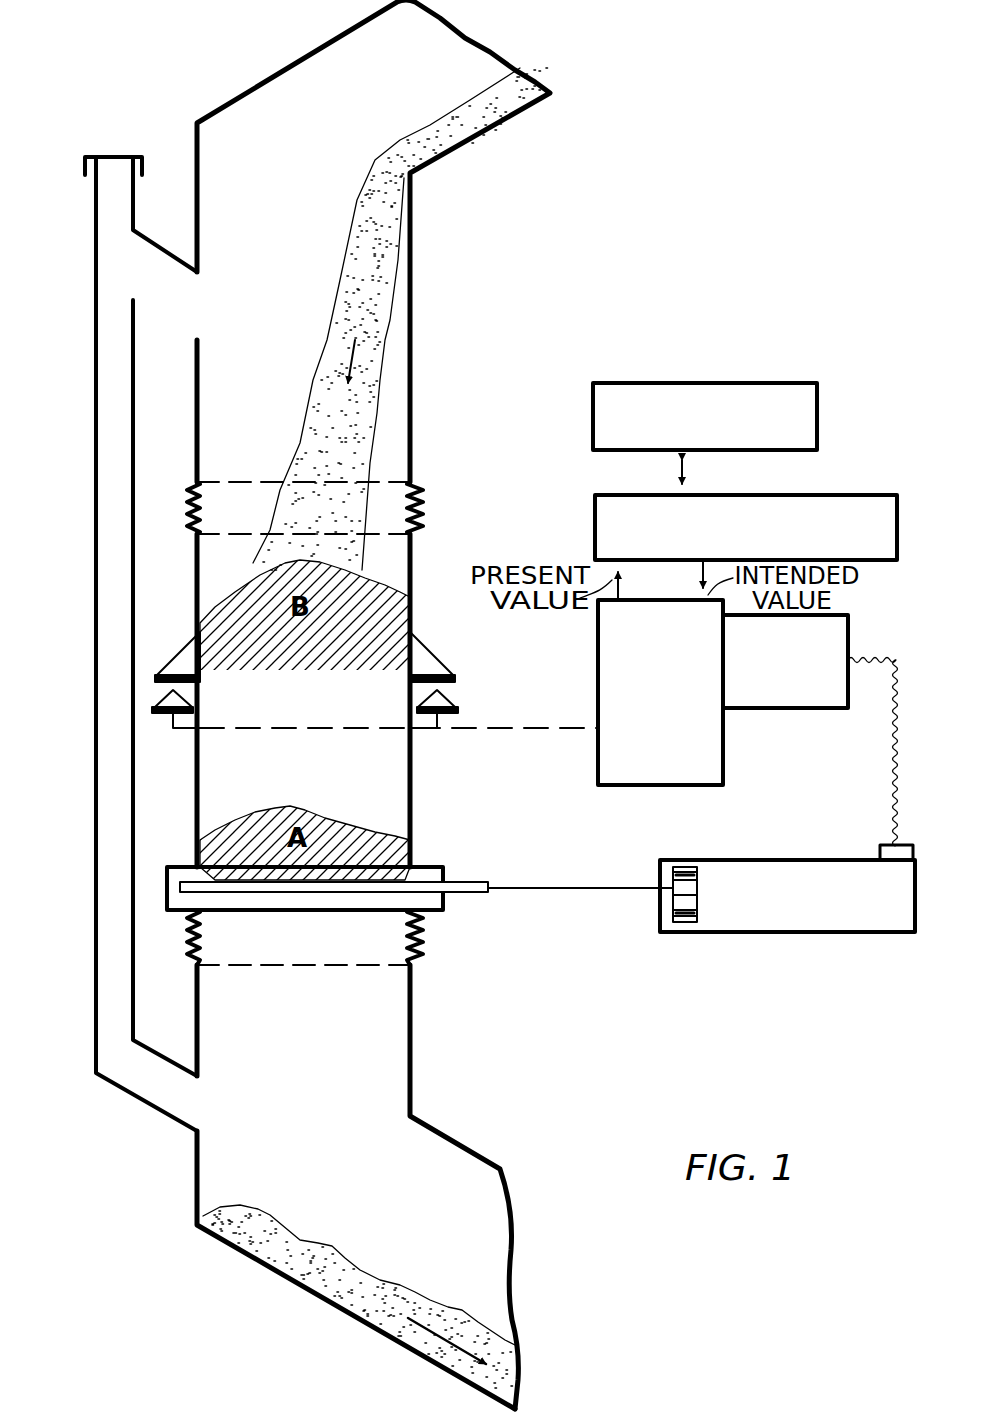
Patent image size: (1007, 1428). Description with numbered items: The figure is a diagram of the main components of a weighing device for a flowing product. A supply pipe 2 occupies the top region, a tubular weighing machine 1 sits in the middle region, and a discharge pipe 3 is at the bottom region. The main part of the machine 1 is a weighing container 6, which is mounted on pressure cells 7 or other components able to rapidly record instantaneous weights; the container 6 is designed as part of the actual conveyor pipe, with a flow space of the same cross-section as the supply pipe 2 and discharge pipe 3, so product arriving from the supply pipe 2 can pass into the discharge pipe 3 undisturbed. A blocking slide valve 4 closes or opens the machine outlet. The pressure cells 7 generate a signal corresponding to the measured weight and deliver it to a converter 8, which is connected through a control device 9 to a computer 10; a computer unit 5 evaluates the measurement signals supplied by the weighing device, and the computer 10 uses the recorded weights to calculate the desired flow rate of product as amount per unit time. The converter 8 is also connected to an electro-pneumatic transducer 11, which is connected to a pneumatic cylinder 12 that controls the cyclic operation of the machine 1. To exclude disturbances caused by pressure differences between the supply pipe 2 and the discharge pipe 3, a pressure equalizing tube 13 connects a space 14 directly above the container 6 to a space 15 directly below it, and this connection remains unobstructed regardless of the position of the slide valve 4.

The tubular weighing machine 1 is at (227, 793).
The supply pipe 2 is at (447, 90).
The discharge pipe 3 is at (445, 1176).
The blocking slide valve 4 is at (280, 885).
The computer unit 5 is at (573, 532).
The weighing container 6 is at (412, 786).
The pressure cells 7 is at (446, 701).
The converter 8 is at (708, 730).
The control device 9 is at (826, 498).
The computer 10 is at (758, 392).
The electro-pneumatic transducer 11 is at (838, 645).
The pneumatic cylinder 12 is at (793, 912).
The pressure equalizing tube 13 is at (93, 378).
The space directly above container 14 is at (238, 296).
The space directly below container 15 is at (312, 1034).